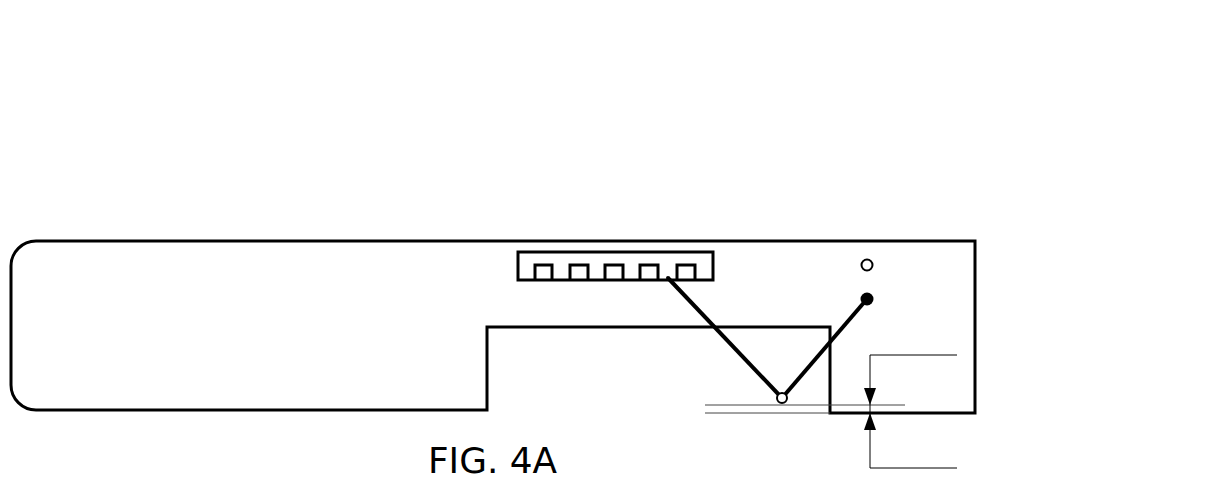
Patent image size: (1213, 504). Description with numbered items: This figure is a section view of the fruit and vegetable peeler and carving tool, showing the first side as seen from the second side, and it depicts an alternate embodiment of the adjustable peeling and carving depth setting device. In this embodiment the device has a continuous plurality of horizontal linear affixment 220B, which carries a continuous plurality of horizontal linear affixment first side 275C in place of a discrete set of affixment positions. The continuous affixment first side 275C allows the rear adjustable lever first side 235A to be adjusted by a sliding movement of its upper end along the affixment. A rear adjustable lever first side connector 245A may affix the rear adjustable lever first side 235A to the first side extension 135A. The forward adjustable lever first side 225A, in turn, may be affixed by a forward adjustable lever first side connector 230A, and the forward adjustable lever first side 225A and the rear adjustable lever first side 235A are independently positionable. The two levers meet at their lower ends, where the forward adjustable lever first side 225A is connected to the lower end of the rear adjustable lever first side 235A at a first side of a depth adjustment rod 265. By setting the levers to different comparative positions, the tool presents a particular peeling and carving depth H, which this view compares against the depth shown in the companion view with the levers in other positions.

The continuous plurality of horizontal linear affixment 220B is at (595, 214).
The continuous plurality of horizontal linear affixment first side 275C is at (533, 239).
The rear adjustable lever first side connector 245A is at (668, 260).
The rear adjustable lever first side 235A is at (668, 300).
The forward adjustable lever first side 225A is at (865, 335).
The forward adjustable lever first side connector 230A is at (890, 279).
The first side extension 135A is at (816, 277).
The depth adjustment rod 265 is at (752, 392).
The peeling and carving depth H is at (831, 411).